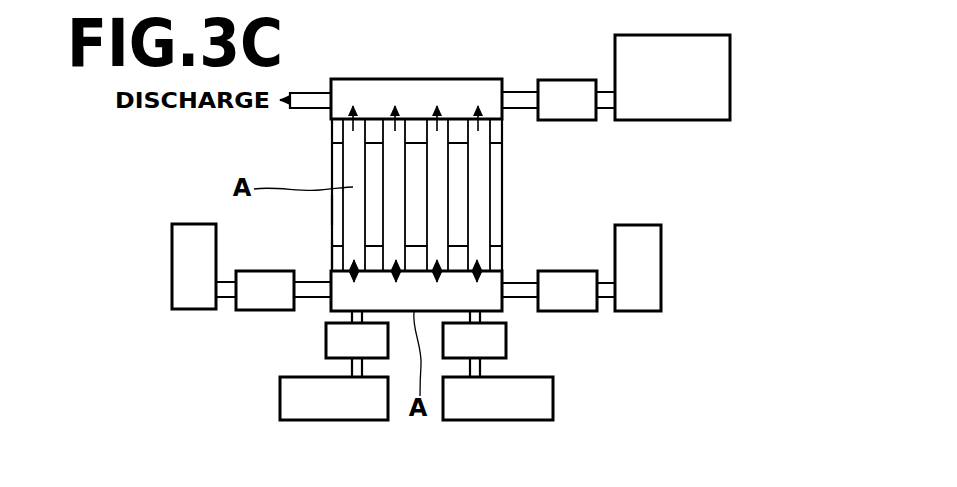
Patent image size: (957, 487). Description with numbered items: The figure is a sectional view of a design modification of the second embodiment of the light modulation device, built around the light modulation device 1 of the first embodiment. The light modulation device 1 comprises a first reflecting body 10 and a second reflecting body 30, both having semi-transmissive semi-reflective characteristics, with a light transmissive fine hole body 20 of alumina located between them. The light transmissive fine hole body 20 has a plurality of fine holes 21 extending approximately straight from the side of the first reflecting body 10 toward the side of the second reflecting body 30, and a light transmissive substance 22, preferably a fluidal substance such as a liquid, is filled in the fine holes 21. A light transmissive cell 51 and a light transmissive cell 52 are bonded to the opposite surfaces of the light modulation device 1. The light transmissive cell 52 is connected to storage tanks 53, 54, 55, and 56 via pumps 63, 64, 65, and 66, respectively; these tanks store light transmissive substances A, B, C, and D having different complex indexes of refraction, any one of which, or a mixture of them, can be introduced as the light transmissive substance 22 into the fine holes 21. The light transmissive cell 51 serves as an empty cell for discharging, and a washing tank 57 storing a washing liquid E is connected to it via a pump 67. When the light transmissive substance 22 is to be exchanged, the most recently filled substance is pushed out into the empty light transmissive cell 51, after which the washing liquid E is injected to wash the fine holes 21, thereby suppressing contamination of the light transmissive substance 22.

The light modulation device 1 is at (506, 228).
The first reflecting body 10 is at (323, 130).
The light transmissive fine hole body 20 is at (325, 210).
The fine hole 21 is at (343, 170).
The light transmissive substance 22 is at (478, 180).
The second reflecting body 30 is at (325, 254).
The light transmissive cell 51 is at (478, 79).
The light transmissive cell 52 is at (505, 311).
The storage tank 53 is at (662, 277).
The storage tank 54 is at (554, 407).
The storage tank 55 is at (279, 402).
The storage tank 56 is at (196, 222).
The washing tank 57 is at (718, 121).
The pump 63 is at (590, 312).
The pump 64 is at (507, 355).
The pump 65 is at (325, 350).
The pump 66 is at (247, 312).
The pump 67 is at (588, 121).